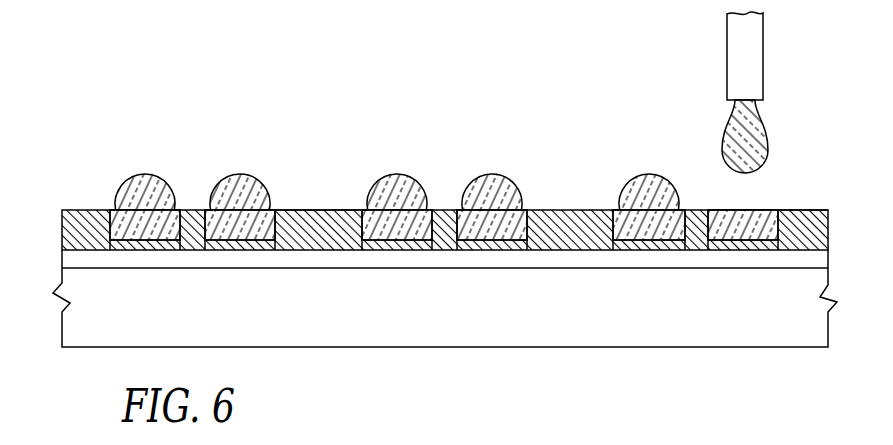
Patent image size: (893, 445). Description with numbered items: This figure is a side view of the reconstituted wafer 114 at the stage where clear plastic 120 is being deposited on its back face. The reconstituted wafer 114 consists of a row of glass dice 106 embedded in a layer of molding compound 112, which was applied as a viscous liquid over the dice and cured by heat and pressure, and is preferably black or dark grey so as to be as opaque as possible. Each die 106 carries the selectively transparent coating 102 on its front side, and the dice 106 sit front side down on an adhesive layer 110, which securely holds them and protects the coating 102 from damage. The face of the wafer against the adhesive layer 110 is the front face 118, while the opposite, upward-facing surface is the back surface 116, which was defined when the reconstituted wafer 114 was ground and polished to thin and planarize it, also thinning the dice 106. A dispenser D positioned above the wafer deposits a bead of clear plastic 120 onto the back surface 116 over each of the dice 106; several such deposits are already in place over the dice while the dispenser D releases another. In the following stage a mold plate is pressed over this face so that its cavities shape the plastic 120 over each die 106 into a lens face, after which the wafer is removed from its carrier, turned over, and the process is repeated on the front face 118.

The selectively transparent coating 102 is at (240, 250).
The die 106 is at (102, 212).
The adhesive layer 110 is at (640, 262).
The molding compound layer 112 is at (808, 210).
The reconstituted wafer 114 is at (503, 113).
The back surface 116 is at (314, 194).
The front face 118 is at (557, 269).
The clear plastic 120 is at (157, 178).
The dispenser D is at (689, 77).